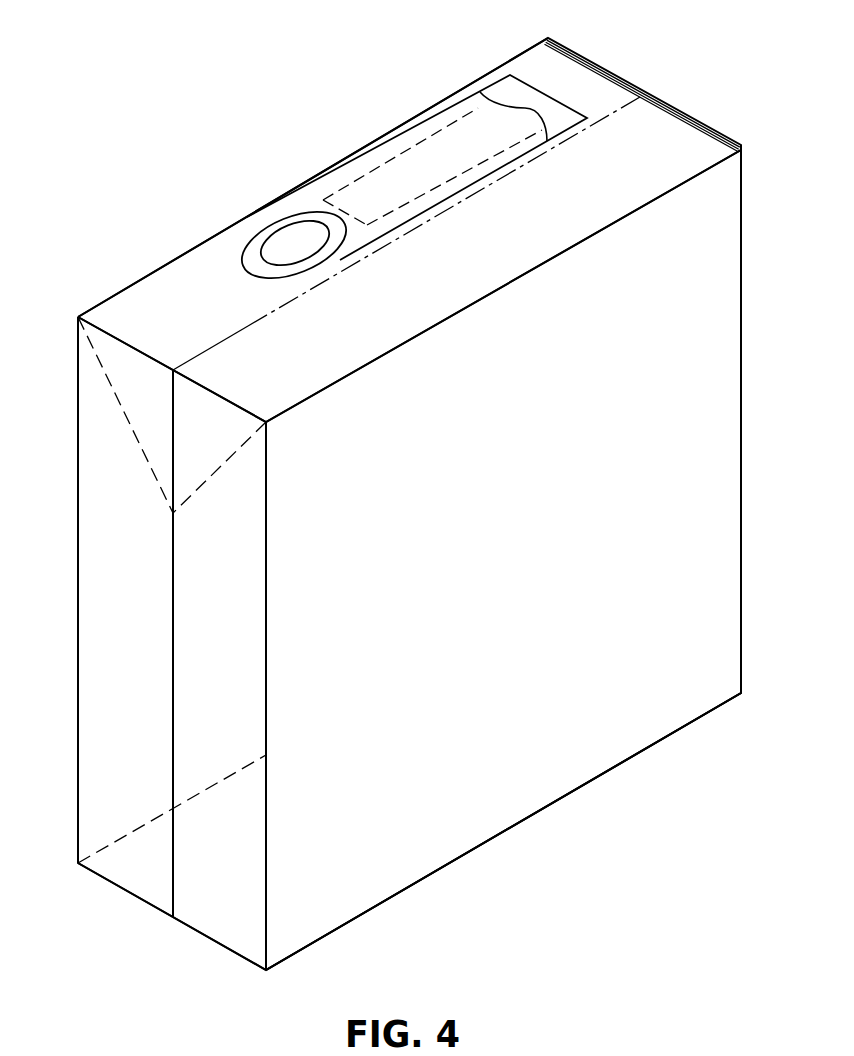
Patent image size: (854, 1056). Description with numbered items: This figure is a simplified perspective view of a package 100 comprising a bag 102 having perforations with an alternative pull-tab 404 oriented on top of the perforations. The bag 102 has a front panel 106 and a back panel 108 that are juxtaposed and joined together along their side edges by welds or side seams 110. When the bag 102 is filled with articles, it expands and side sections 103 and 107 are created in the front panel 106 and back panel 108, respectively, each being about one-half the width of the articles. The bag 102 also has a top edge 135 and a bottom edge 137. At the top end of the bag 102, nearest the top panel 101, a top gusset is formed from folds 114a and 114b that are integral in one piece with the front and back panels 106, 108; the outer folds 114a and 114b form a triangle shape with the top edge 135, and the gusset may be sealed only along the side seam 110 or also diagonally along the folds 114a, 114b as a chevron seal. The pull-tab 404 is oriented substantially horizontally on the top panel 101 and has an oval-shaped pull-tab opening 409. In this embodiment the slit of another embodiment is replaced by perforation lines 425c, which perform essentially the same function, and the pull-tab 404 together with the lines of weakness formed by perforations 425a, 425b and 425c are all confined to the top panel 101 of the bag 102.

The package 100 is at (296, 67).
The top panel 101 is at (181, 258).
The bag 102 is at (741, 420).
The side section 103 is at (218, 937).
The front panel 106 is at (625, 747).
The side section 107 is at (120, 881).
The back panel 108 is at (79, 740).
The side seam 110 is at (173, 641).
The fold 114a is at (149, 462).
The fold 114b is at (196, 492).
The top edge 135 is at (148, 356).
The bottom edge 137 is at (502, 830).
The pull-tab 404 is at (418, 126).
The pull-tab opening 409 is at (270, 240).
The perforation 425a is at (392, 162).
The perforation 425b is at (440, 184).
The perforation line 425c is at (323, 207).